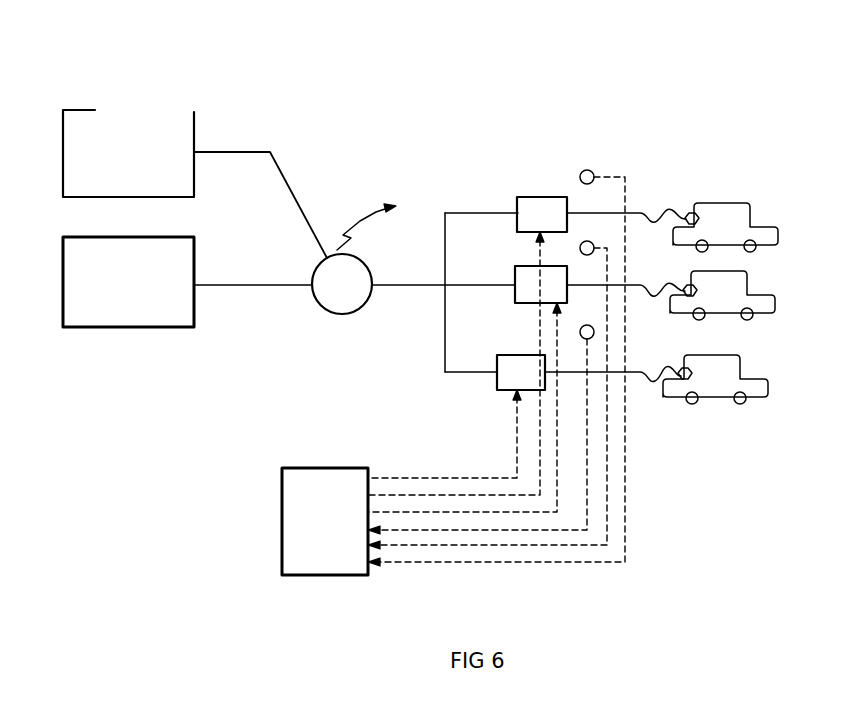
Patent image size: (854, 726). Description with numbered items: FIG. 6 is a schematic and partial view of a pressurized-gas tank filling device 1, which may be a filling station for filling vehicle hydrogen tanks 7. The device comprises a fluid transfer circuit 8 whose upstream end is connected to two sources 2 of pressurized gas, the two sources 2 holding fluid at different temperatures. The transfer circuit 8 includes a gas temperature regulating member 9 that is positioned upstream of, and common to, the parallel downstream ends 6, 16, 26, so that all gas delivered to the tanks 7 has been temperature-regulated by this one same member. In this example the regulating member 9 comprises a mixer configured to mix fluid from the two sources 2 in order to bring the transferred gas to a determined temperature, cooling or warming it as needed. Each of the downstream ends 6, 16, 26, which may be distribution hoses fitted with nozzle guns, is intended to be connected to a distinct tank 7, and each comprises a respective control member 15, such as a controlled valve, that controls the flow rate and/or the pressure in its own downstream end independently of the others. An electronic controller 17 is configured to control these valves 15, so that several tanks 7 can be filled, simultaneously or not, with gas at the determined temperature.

The pressurized-gas tank filling device 1 is at (127, 453).
The source of pressurized gas 2 is at (135, 163).
The downstream end 6 is at (640, 213).
The vehicle hydrogen tank 7 is at (757, 384).
The fluid transfer circuit 8 is at (395, 287).
The temperature regulating member 9 is at (350, 295).
The control member 15 is at (516, 268).
The downstream end 16 is at (645, 285).
The electronic controller 17 is at (338, 532).
The downstream end 26 is at (645, 374).